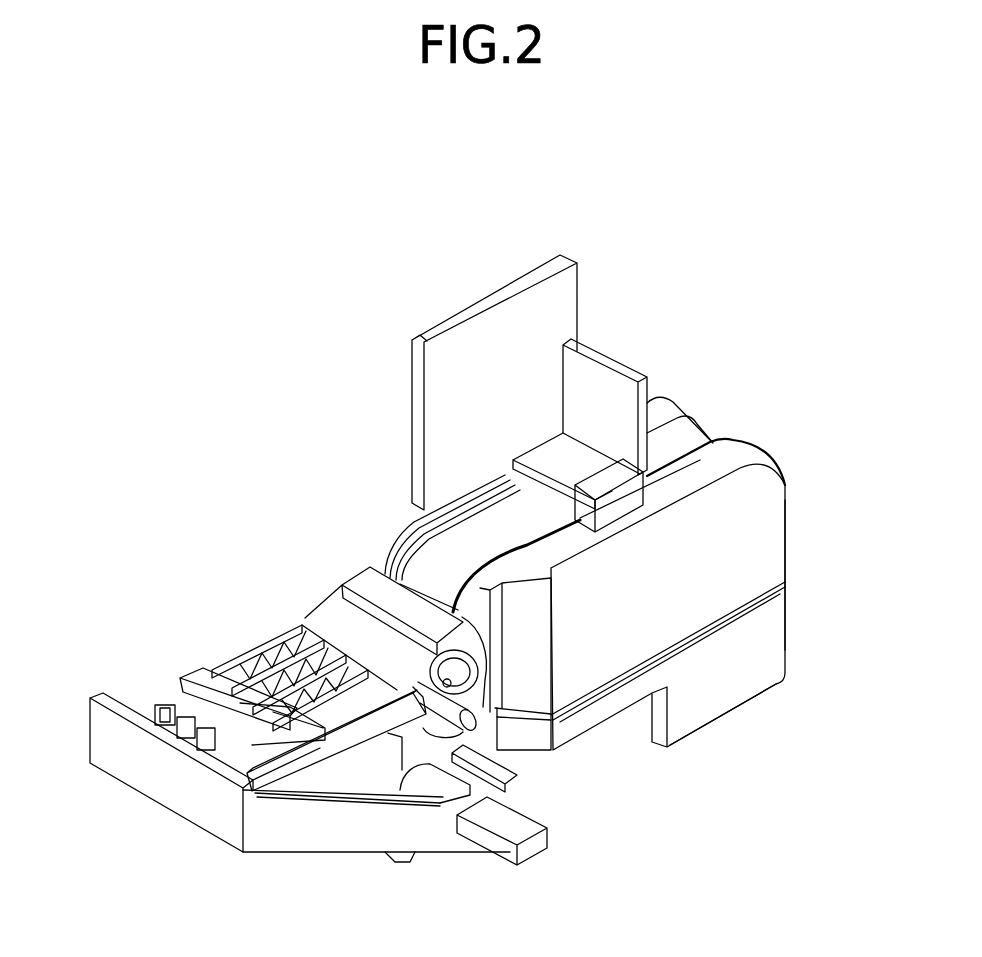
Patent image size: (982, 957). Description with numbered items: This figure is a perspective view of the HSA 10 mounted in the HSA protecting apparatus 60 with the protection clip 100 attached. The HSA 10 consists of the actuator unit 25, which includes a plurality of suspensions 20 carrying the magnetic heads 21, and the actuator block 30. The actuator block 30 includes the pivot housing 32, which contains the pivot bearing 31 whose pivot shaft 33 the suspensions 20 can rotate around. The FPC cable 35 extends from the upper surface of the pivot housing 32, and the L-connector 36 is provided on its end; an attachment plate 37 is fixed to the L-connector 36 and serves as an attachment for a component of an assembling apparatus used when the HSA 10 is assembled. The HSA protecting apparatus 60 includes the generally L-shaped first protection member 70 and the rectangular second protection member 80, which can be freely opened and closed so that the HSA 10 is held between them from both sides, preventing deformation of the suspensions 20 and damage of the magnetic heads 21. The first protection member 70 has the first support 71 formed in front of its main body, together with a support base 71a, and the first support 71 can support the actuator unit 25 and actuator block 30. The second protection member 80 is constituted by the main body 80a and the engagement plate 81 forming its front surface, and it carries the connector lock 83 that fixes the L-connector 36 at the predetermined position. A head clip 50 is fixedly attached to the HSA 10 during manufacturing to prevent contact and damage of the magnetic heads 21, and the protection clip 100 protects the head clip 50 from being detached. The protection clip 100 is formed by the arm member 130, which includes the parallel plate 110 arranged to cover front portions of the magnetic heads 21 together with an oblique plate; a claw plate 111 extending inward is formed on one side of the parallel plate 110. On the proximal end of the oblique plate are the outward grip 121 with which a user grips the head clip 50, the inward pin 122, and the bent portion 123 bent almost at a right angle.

The HSA 10 is at (143, 537).
The suspensions 20 is at (175, 700).
The magnetic heads 21 is at (168, 697).
The actuator unit 25 is at (255, 648).
The actuator block 30 is at (378, 555).
The pivot bearing 31 is at (450, 682).
The pivot housing 32 is at (325, 605).
The pivot shaft 33 is at (467, 682).
The FPC cable 35 is at (478, 497).
The L-connector 36 is at (597, 374).
The attachment plate 37 is at (565, 292).
The head clip 50 is at (193, 673).
The HSA protecting apparatus 60 is at (809, 187).
The first protection member 70 is at (678, 401).
The first support 71 is at (403, 864).
The support base 71a is at (768, 638).
The second protection member 80 is at (750, 441).
The main body 80a is at (768, 520).
The engagement plate 81 is at (558, 565).
The connector lock 83 is at (620, 510).
The protection clip 100 is at (180, 824).
The parallel plate 110 is at (94, 730).
The claw plate 111 is at (288, 735).
The grip 121 is at (525, 860).
The pin 122 is at (428, 787).
The bent portion 123 is at (489, 765).
The arm member 130 is at (135, 770).